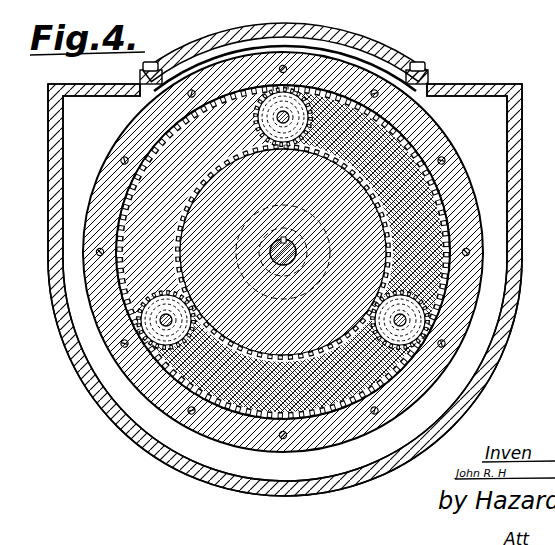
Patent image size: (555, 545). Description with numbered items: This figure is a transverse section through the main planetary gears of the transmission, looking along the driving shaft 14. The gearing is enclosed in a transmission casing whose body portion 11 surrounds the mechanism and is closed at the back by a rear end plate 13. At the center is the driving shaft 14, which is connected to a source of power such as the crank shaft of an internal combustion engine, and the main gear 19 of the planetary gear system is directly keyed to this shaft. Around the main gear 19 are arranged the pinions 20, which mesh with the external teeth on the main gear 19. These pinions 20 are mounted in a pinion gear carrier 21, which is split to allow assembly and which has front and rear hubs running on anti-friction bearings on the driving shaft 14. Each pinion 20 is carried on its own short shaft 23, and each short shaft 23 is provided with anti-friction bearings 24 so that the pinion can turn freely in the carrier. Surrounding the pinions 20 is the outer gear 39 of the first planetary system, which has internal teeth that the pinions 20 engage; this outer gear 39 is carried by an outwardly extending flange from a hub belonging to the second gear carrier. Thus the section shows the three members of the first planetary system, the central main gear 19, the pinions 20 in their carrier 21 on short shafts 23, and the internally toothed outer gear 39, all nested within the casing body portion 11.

The body portion 11 is at (338, 489).
The rear end plate 13 is at (299, 290).
The anti-friction bearings 24 is at (302, 44).
The outer gear 39 is at (430, 163).
The pinion gear carrier 21 is at (427, 230).
The main gear 19 is at (384, 211).
The short shaft 23 is at (415, 336).
The pinions 20 is at (405, 321).
The driving shaft 14 is at (282, 250).